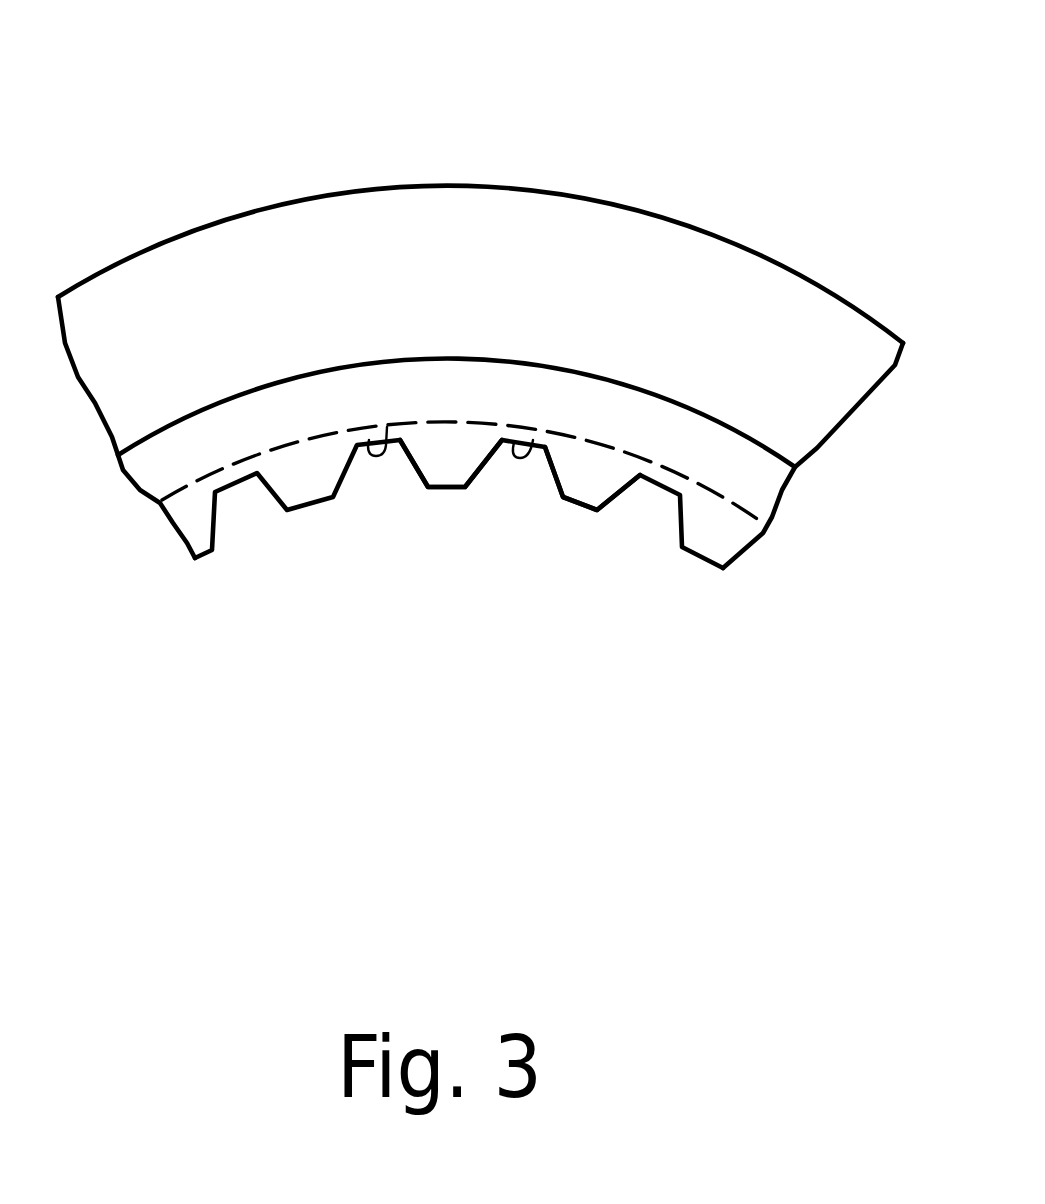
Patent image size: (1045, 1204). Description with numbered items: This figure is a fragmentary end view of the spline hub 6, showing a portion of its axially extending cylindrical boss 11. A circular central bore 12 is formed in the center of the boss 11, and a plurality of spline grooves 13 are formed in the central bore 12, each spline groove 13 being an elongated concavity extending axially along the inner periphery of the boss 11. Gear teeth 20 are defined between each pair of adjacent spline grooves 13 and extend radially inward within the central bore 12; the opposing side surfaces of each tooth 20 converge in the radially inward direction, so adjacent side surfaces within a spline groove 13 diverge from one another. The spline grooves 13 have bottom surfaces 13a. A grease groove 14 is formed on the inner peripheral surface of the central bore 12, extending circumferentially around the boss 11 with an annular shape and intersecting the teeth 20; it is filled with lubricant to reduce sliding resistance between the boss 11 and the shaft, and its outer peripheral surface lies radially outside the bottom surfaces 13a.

The spline hub 6 is at (855, 137).
The cylindrical boss 11 is at (723, 320).
The central bore 12 is at (358, 640).
The spline grooves 13 is at (483, 470).
The bottom surfaces 13a is at (387, 427).
The grease grooves 14 is at (307, 432).
The gear teeth 20 is at (443, 460).